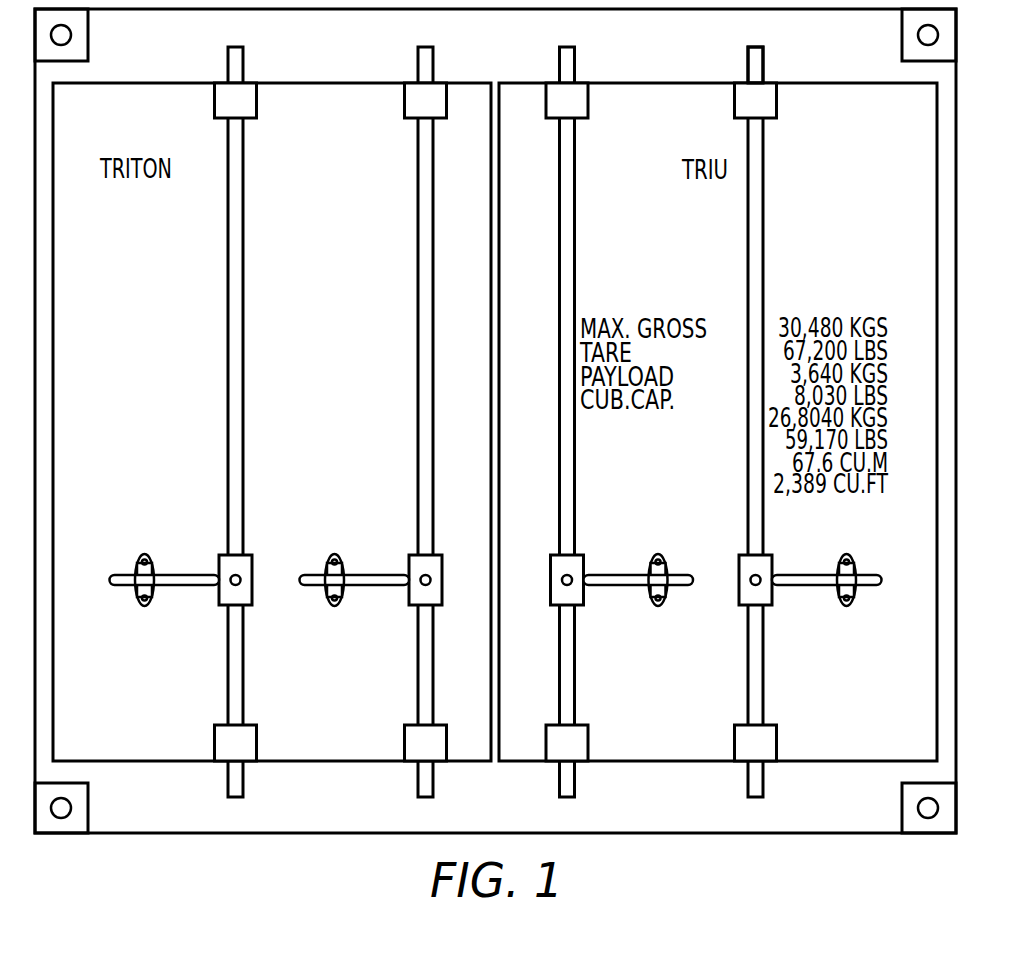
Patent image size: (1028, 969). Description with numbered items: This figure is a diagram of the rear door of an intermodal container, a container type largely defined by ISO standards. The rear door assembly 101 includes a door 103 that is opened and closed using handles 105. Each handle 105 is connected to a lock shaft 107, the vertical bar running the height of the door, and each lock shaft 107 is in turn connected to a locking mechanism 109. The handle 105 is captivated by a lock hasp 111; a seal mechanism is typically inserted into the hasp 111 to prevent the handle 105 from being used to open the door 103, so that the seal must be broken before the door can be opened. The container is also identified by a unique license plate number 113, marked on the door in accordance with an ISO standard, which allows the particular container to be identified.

The rear door assembly 101 is at (945, 746).
The door 103 is at (920, 282).
The handle 105 is at (875, 588).
The lock shaft 107 is at (749, 443).
The locking mechanism 109 is at (764, 65).
The lock hasp 111 is at (856, 576).
The license plate number 113 is at (850, 170).